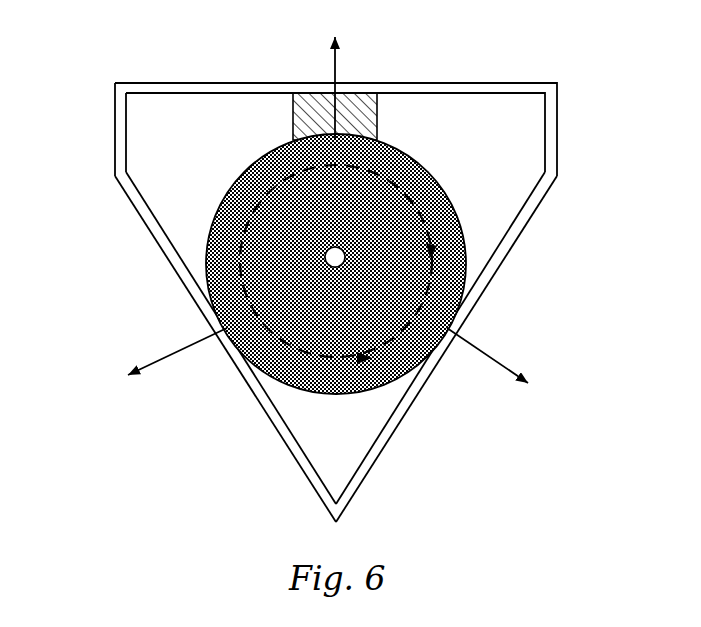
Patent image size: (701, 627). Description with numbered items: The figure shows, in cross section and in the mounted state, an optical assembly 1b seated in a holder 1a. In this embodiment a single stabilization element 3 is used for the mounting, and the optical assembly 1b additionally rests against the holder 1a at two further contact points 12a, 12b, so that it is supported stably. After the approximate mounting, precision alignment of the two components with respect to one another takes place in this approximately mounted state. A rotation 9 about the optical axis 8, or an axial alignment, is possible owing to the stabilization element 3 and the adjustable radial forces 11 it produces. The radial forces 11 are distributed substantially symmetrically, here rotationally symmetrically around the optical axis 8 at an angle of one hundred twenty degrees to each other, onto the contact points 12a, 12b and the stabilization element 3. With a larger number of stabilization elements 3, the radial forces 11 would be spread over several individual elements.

The holder 1a is at (332, 279).
The optical assembly 1b is at (303, 373).
The stabilization element 3 is at (370, 95).
The optical axis 8 is at (342, 251).
The rotation 9 is at (360, 360).
The radial forces 11 is at (333, 67).
The contact point 12a is at (455, 325).
The contact point 12b is at (210, 318).